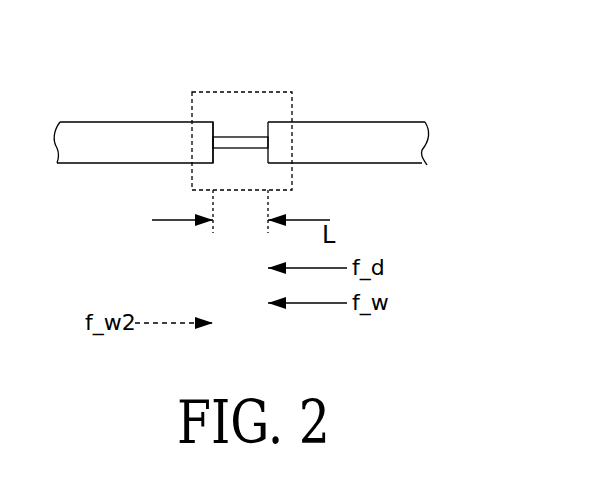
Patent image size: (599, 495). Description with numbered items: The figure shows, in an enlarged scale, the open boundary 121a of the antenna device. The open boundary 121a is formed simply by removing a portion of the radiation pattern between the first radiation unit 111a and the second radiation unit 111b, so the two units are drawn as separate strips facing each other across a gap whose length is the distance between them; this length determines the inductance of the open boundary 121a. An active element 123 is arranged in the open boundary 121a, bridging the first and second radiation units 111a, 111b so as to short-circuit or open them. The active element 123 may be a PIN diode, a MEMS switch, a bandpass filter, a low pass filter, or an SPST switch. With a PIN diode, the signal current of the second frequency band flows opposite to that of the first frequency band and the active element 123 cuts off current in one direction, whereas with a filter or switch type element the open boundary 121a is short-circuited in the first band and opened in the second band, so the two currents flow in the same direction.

The second radiation unit 111b is at (135, 122).
The first radiation unit 111a is at (392, 122).
The active element 123 is at (241, 137).
The open boundary 121a is at (268, 92).